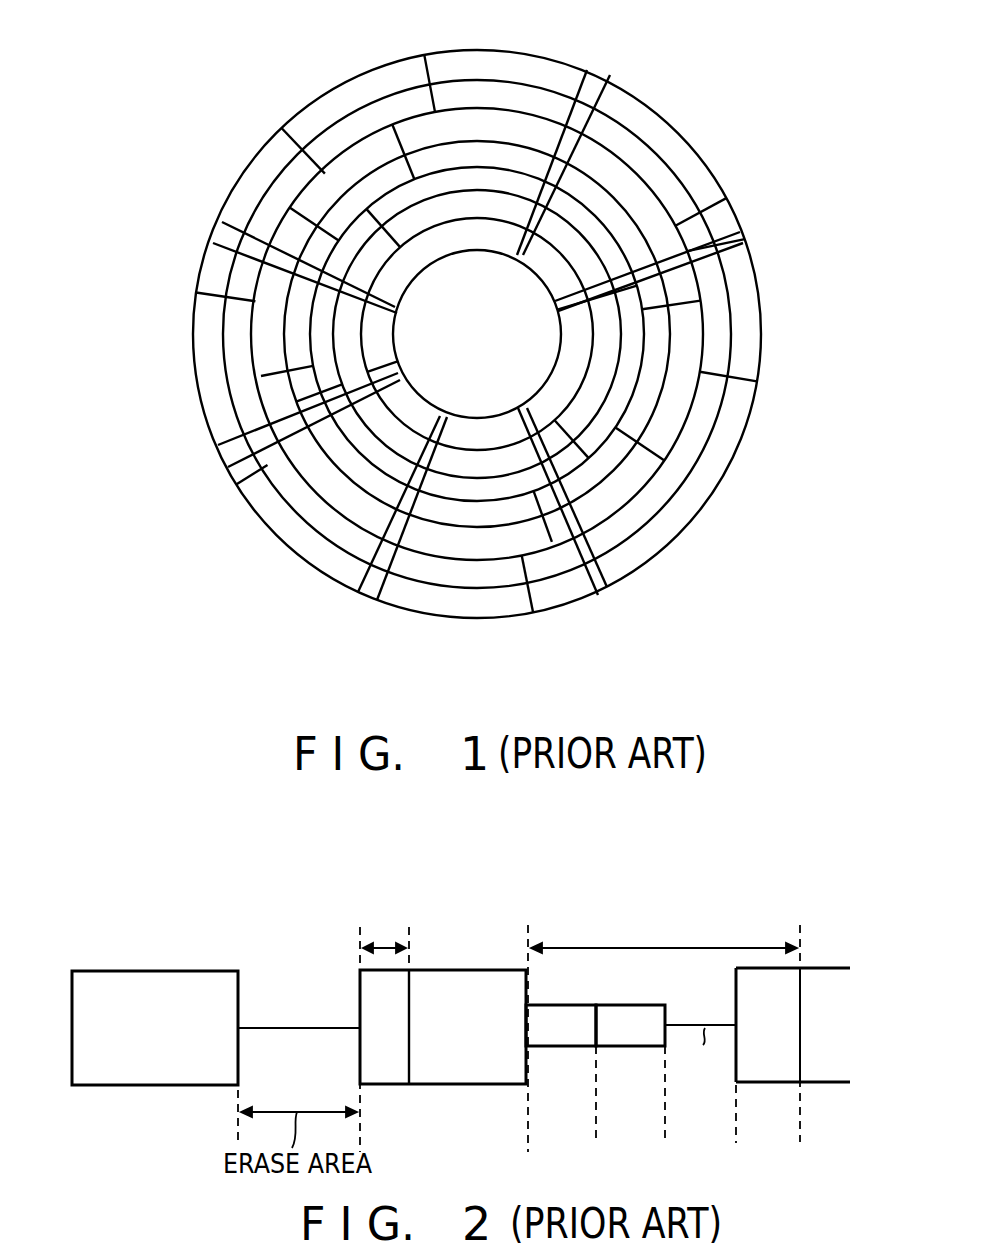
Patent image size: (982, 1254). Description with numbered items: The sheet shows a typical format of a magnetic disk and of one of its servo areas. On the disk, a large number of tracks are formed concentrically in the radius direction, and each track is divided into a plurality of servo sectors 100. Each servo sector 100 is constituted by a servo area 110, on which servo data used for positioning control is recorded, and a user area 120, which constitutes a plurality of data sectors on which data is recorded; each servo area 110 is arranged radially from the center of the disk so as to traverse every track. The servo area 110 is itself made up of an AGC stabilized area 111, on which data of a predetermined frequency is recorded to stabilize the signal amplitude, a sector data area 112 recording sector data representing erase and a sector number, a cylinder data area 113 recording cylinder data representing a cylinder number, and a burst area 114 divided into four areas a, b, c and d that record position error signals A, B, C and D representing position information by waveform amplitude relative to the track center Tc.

In FIG. 1, the servo sector 100 is at (743, 461).
In FIG. 1, the servo area 110 is at (597, 72).
In FIG. 1, the user area 120 is at (634, 29).
In FIG. 2, the AGC stabilized area 111 is at (152, 970).
In FIG. 2, the sector data area 112 is at (383, 945).
In FIG. 2, the cylinder data area 113 is at (457, 1087).
In FIG. 2, the burst area 114 is at (617, 945).